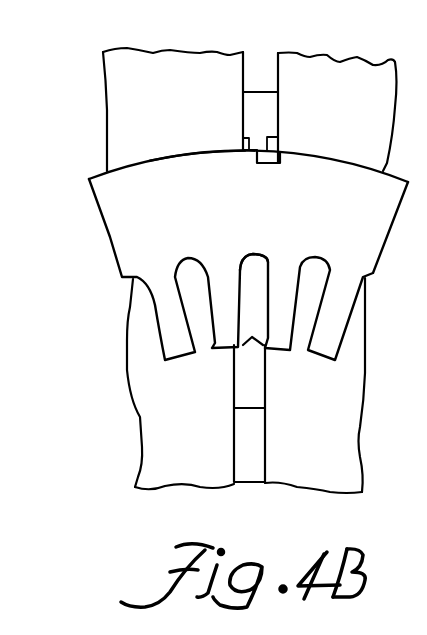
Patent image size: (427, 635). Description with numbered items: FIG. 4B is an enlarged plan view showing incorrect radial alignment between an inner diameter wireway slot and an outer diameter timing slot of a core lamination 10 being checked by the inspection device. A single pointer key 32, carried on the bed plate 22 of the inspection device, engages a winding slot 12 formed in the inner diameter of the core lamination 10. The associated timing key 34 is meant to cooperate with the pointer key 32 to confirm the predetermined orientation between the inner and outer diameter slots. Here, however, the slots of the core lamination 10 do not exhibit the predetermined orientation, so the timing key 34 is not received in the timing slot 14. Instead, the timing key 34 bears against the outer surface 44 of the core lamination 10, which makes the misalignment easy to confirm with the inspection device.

The bed plate 22 is at (156, 80).
The timing key 34 is at (263, 113).
The timing slot 14 is at (287, 157).
The outer surface 44 is at (213, 113).
The core lamination 10 is at (130, 227).
The winding slot 12 is at (243, 282).
The pointer key 32 is at (250, 382).